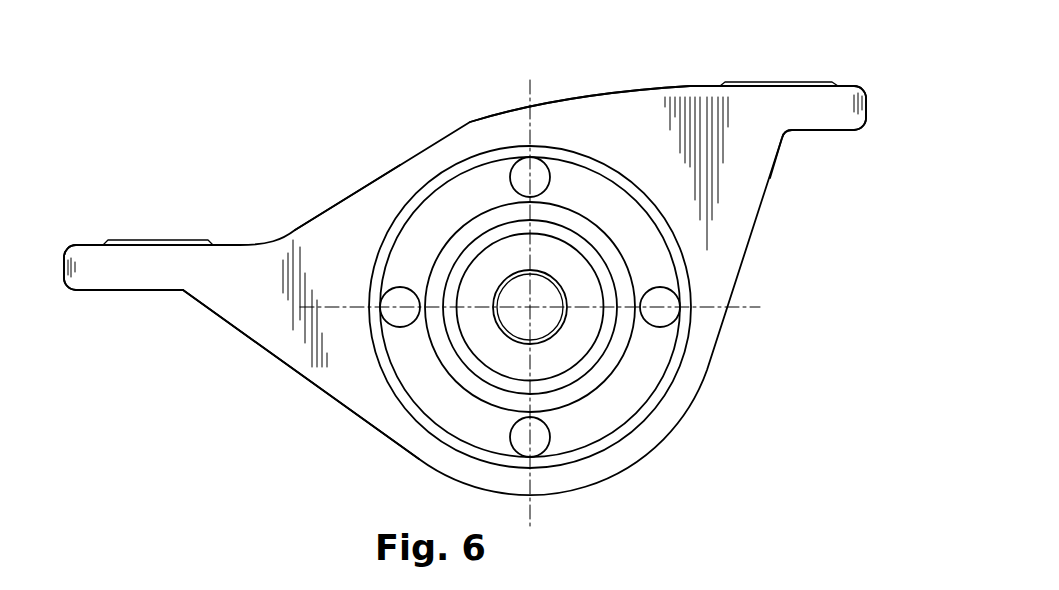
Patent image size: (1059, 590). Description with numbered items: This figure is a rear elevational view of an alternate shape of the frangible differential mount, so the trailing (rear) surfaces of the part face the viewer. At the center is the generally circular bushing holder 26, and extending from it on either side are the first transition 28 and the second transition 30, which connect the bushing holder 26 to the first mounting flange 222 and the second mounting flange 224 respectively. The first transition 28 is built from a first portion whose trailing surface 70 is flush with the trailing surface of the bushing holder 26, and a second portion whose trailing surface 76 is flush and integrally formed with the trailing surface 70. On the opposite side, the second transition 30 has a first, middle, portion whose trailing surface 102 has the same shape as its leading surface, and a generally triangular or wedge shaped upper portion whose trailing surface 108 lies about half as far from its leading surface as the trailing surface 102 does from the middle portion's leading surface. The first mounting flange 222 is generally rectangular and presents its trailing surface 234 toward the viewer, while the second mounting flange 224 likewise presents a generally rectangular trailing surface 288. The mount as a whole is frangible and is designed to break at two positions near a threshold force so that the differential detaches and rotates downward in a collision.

The bushing holder 26 is at (655, 413).
The first transition 28 is at (652, 112).
The second transition 30 is at (317, 260).
The trailing surface 70 is at (707, 157).
The trailing surface 76 is at (758, 100).
The trailing surface 102 is at (275, 318).
The trailing surface 108 is at (328, 230).
The first mounting flange 222 is at (838, 105).
The second mounting flange 224 is at (88, 275).
The trailing surface 234 is at (793, 110).
The trailing surface 288 is at (97, 258).